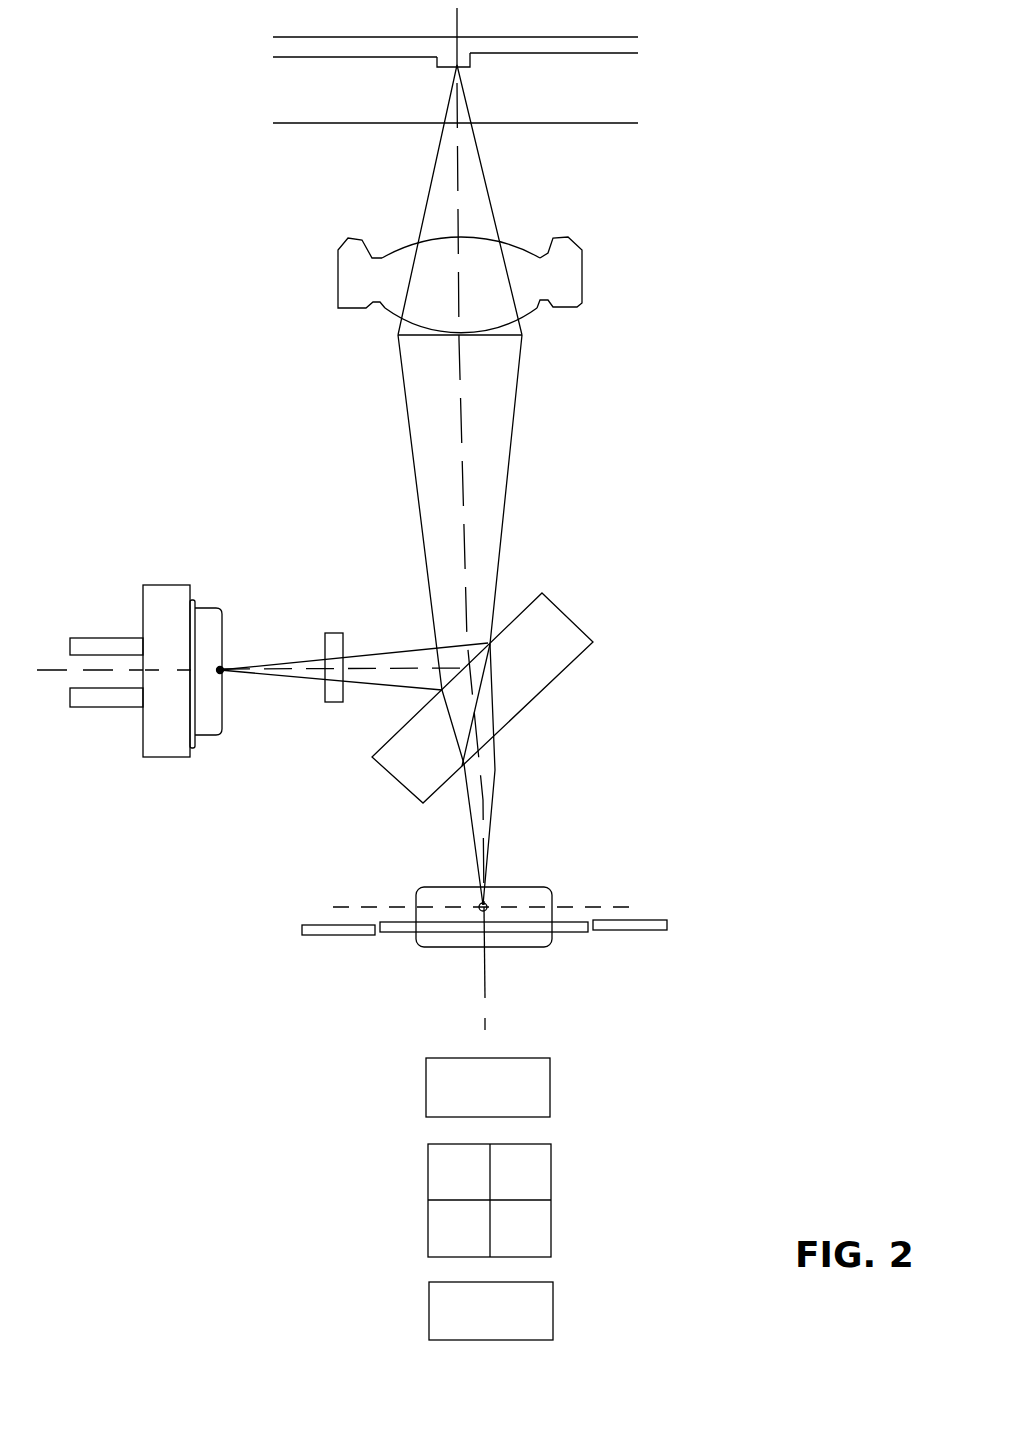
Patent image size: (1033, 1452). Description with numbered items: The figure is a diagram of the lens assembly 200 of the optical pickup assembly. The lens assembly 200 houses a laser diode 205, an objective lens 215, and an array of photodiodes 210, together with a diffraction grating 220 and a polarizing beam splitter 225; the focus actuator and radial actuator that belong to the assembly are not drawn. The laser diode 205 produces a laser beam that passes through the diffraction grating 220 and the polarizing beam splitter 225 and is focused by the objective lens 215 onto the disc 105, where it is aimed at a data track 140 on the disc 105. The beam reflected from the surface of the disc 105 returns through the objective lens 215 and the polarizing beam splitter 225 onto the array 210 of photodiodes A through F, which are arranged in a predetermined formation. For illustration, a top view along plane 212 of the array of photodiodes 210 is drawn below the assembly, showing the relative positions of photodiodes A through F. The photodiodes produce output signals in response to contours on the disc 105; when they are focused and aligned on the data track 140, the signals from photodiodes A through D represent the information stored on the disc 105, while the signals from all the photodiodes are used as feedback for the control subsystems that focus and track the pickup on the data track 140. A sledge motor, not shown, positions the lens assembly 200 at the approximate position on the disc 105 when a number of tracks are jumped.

The lens assembly 200 is at (268, 364).
The disc 105 is at (553, 37).
The data track 140 is at (470, 60).
The objective lens 215 is at (582, 272).
The laser diode 205 is at (168, 588).
The diffraction grating 220 is at (338, 633).
The polarizing beam splitter 225 is at (565, 616).
The array of photodiodes 210 is at (508, 890).
The plane (top view of photodiode array) 212 is at (368, 896).